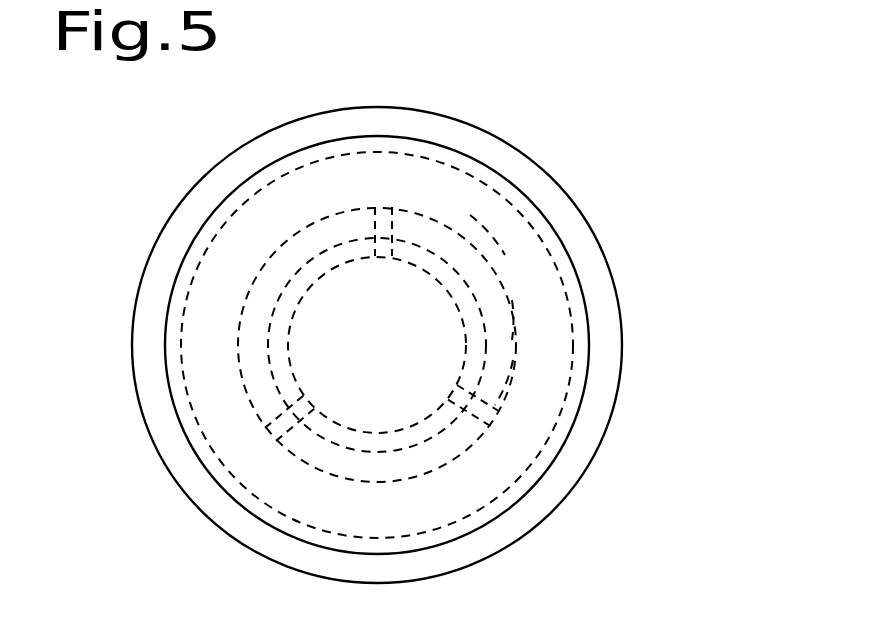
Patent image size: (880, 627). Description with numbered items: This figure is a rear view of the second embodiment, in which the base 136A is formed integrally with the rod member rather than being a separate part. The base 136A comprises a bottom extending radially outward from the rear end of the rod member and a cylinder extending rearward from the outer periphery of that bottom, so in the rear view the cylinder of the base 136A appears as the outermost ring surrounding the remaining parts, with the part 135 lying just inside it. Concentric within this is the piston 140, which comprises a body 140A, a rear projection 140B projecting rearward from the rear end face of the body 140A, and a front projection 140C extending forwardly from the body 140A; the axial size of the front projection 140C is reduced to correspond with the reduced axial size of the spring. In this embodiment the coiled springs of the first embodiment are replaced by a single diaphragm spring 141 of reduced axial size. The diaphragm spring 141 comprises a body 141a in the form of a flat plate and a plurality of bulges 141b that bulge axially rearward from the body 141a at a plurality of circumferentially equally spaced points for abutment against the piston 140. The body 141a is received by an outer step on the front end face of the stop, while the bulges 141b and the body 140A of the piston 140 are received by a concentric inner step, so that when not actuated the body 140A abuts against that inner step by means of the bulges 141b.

The cylindrical wall 135 is at (578, 356).
The base 136A is at (500, 143).
The piston 140 is at (430, 315).
The body 140A is at (513, 318).
The rear projection 140B is at (512, 378).
The front projection 140C is at (477, 247).
The diaphragm spring 141 is at (412, 365).
The body 141a is at (422, 517).
The bulges 141b is at (414, 214).